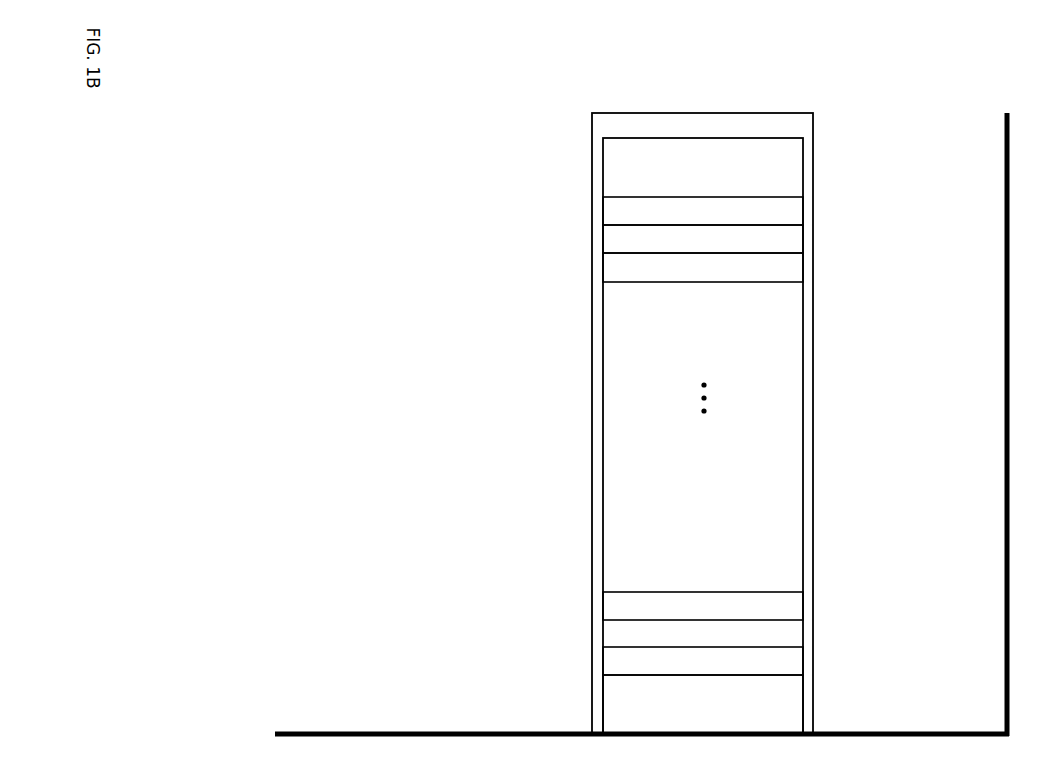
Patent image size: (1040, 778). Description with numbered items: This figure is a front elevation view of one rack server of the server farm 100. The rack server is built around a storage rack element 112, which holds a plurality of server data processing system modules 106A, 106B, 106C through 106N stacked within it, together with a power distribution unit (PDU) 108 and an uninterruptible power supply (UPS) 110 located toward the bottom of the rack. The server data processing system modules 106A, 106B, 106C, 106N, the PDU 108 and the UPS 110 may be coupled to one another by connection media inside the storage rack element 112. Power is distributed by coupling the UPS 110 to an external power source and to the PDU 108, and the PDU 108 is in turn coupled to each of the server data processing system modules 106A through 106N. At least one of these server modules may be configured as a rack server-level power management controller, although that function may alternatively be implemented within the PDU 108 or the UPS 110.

The server farm 100 is at (619, 381).
The storage rack element 112 is at (746, 376).
The server data processing system module 106A is at (634, 170).
The server data processing system module 106B is at (636, 198).
The server data processing system module 106C is at (634, 226).
The server data processing system module 106N is at (634, 565).
The power distribution unit (PDU) 108 is at (766, 620).
The uninterruptible power supply (UPS) 110 is at (766, 670).